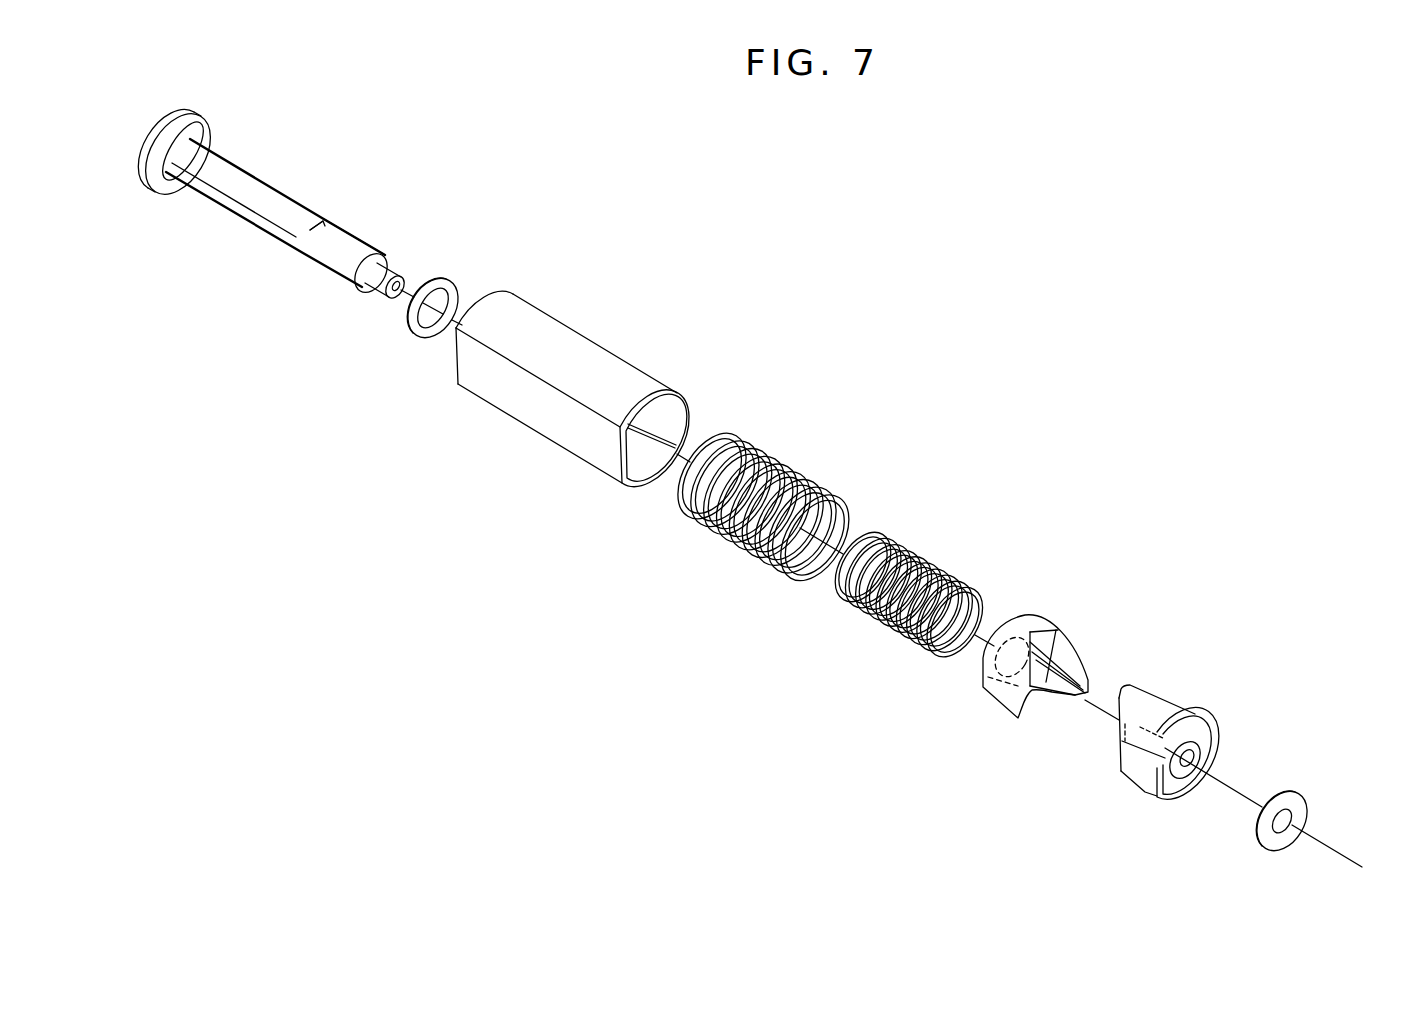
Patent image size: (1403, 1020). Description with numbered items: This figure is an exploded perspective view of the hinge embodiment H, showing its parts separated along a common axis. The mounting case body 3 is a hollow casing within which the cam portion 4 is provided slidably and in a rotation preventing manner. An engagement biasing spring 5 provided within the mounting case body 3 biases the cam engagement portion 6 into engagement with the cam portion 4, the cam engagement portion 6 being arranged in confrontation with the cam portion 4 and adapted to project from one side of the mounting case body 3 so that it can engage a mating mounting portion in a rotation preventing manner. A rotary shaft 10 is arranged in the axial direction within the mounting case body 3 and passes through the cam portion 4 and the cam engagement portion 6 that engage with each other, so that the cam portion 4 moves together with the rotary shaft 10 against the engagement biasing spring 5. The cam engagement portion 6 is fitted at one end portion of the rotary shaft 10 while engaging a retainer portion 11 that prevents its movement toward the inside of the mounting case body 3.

The rotary shaft 10 is at (290, 198).
The retainer portion 11 is at (335, 223).
The mounting case body 3 is at (587, 338).
The engagement biasing spring 5 is at (903, 557).
The cam portion 4 is at (1035, 627).
The cam engagement portion 6 is at (1182, 714).
The hinge assembly H is at (857, 320).